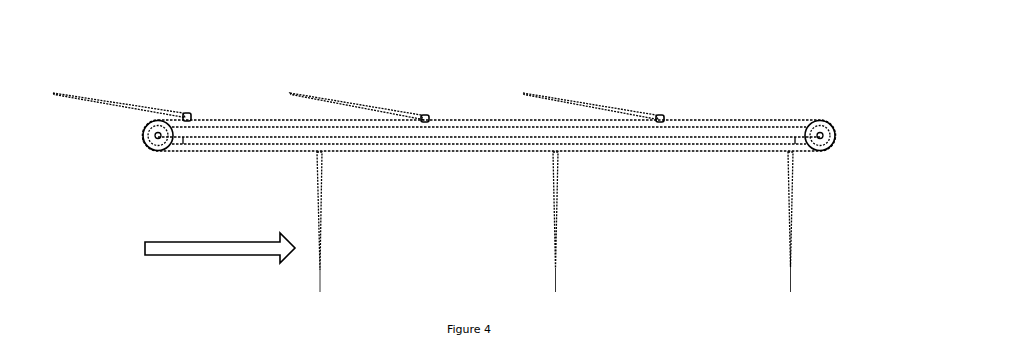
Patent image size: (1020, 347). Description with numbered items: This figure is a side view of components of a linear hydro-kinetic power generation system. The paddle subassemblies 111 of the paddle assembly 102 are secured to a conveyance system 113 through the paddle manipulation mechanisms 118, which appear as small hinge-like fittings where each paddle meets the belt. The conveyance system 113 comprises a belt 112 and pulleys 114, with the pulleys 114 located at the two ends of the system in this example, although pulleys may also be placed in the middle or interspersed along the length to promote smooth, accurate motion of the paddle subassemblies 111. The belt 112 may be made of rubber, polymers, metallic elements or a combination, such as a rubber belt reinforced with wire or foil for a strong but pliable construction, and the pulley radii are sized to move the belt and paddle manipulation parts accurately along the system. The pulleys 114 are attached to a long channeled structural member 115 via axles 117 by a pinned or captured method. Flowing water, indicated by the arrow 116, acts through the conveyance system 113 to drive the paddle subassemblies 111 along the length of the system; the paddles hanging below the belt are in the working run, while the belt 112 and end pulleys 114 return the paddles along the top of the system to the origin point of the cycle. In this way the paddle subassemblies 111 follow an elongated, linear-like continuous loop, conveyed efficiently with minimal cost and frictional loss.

The paddle assembly 102 is at (767, 52).
The paddle subassemblies 111 is at (92, 95).
The belt 112 is at (171, 153).
The conveyance system 113 is at (91, 209).
The pulleys 114 is at (143, 148).
The long channeled structural member 115 is at (444, 138).
The arrow indicating flowing water 116 is at (195, 248).
The axles 117 is at (822, 133).
The paddle manipulation mechanisms 118 is at (197, 109).